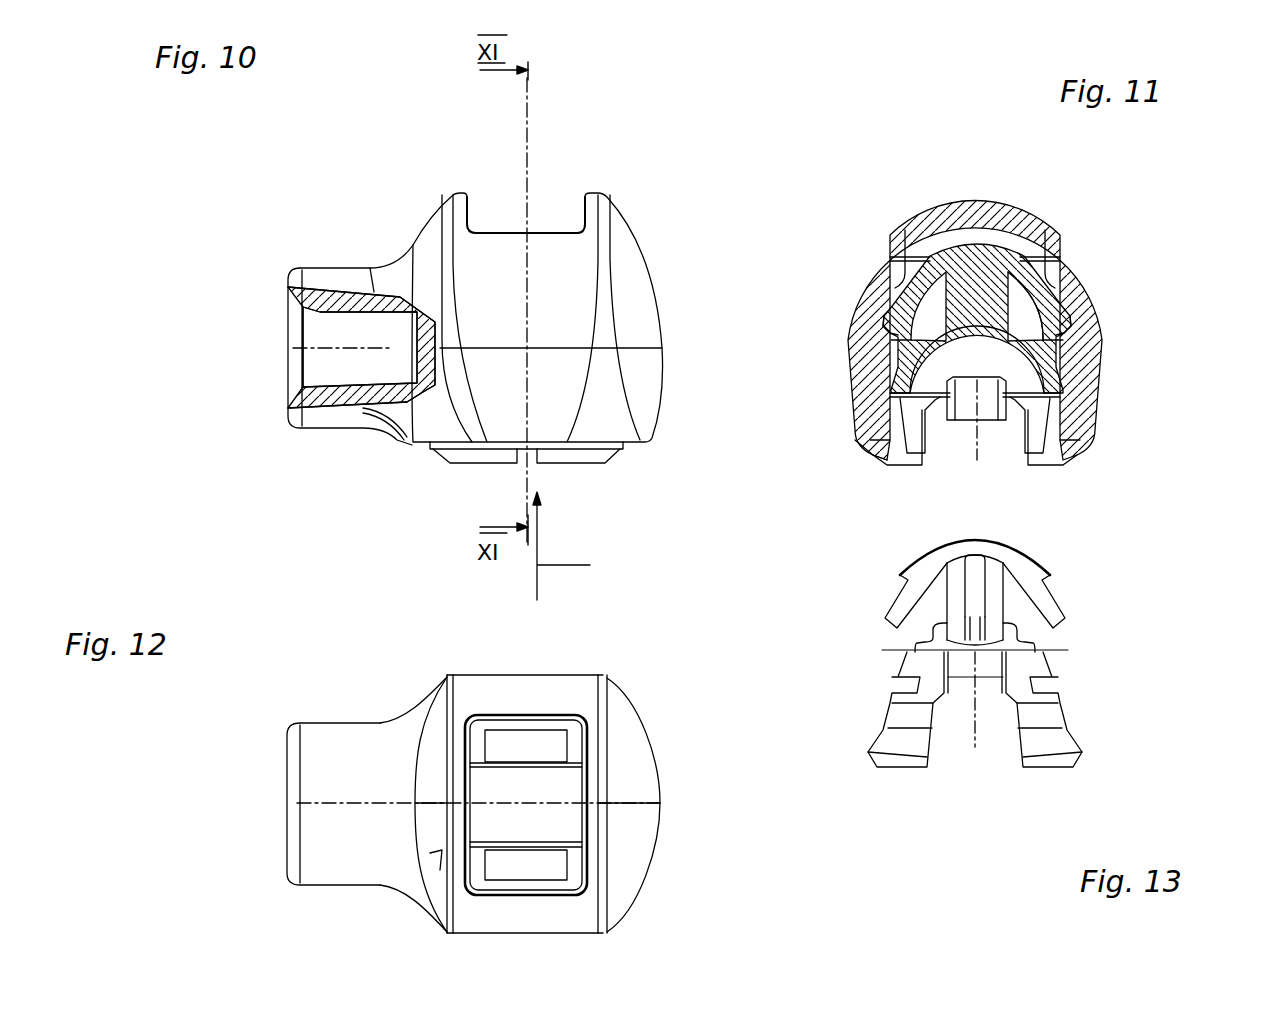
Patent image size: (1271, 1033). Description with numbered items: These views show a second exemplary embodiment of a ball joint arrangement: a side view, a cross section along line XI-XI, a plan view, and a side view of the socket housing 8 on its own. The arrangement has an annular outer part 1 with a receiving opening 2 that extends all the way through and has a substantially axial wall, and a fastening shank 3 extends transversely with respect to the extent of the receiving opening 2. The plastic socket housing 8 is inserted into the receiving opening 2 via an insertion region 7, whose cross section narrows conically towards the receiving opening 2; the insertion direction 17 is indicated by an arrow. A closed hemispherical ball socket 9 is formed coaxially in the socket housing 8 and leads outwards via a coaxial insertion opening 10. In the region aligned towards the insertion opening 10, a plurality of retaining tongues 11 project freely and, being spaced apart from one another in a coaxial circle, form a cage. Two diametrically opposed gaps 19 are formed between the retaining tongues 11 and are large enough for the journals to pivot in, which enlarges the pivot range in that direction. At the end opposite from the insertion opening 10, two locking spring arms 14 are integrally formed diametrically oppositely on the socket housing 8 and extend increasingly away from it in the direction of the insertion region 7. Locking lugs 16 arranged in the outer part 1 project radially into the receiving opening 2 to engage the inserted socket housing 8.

In FIG. 10, the annular outer part 1 is at (623, 263).
In FIG. 11, the annular outer part 1 is at (877, 270).
In FIG. 12, the annular outer part 1 is at (635, 747).
In FIG. 10, the receiving opening 2 is at (498, 215).
In FIG. 11, the receiving opening 2 is at (972, 217).
In FIG. 10, the fastening shank 3 is at (320, 393).
In FIG. 12, the fastening shank 3 is at (330, 752).
In FIG. 11, the insertion region 7 is at (887, 437).
In FIG. 11, the socket housing 8 is at (1033, 329).
In FIG. 13, the socket housing 8 is at (1102, 658).
In FIG. 11, the ball socket 9 is at (990, 355).
In FIG. 11, the insertion opening 10 is at (1033, 432).
In FIG. 10, the retaining tongues 11 is at (470, 455).
In FIG. 11, the retaining tongues 11 is at (888, 455).
In FIG. 13, the retaining tongues 11 is at (1053, 740).
In FIG. 12, the locking spring arms 14 is at (523, 748).
In FIG. 13, the locking spring arms 14 is at (907, 597).
In FIG. 11, the locking lugs 16 is at (897, 300).
In FIG. 10, the insertion direction 17 is at (582, 546).
In FIG. 11, the gaps 19 is at (952, 437).
In FIG. 13, the gaps 19 is at (958, 737).